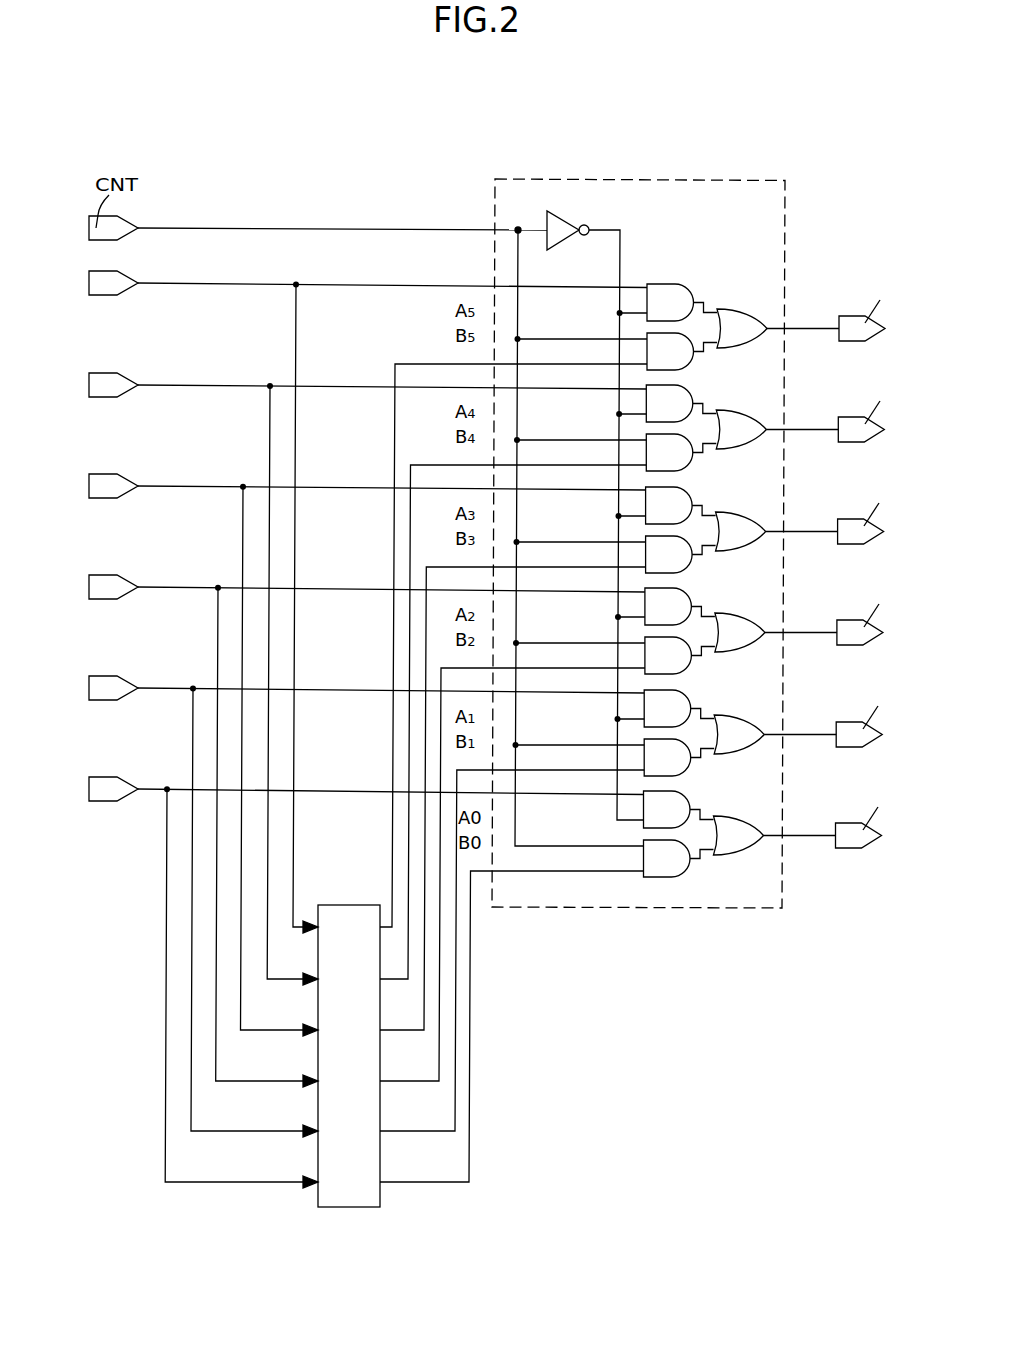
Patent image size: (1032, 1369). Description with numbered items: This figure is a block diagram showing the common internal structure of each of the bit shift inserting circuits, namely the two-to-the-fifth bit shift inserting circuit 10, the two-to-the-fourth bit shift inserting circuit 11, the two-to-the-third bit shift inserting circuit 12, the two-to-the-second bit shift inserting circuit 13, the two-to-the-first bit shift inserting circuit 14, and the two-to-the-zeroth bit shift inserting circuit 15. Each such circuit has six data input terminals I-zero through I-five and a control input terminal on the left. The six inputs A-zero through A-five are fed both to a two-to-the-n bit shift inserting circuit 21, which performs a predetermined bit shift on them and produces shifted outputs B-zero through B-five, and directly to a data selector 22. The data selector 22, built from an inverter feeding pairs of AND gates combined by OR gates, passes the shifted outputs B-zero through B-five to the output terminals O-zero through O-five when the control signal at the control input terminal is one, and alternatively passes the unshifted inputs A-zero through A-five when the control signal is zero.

The 2^n bit shift inserting circuit 21 is at (341, 1207).
The data selector 22 is at (520, 178).
The 2^0 bit shift inserting circuit 15 is at (95, 287).
The 2^1 bit shift inserting circuit 14 is at (95, 389).
The 2^2 bit shift inserting circuit 13 is at (95, 490).
The 2^3 bit shift inserting circuit 12 is at (95, 591).
The 2^4 bit shift inserting circuit 11 is at (95, 692).
The 2^5 bit shift inserting circuit 10 is at (95, 793).